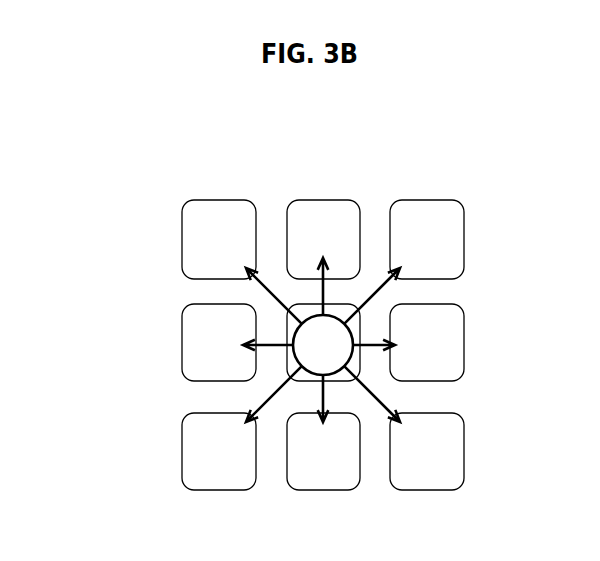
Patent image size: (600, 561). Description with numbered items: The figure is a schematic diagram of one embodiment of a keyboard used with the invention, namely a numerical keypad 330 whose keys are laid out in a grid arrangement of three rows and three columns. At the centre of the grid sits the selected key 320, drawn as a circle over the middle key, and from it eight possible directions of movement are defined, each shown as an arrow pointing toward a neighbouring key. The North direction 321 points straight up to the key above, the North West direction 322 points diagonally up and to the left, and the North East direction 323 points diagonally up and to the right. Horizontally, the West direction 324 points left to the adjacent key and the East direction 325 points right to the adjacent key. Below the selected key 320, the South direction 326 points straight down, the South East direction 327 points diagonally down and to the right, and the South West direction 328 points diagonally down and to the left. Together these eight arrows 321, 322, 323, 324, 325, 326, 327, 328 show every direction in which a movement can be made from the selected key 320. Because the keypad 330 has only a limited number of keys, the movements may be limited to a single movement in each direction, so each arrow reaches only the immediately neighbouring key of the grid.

The numerical keypad 330 is at (139, 160).
The selected key 320 is at (296, 326).
The North direction of movement 321 is at (326, 291).
The North West direction of movement 322 is at (274, 296).
The North East direction of movement 323 is at (380, 280).
The West direction of movement 324 is at (272, 350).
The East direction of movement 325 is at (368, 342).
The South direction of movement 326 is at (320, 398).
The South East direction of movement 327 is at (366, 395).
The South West direction of movement 328 is at (262, 402).